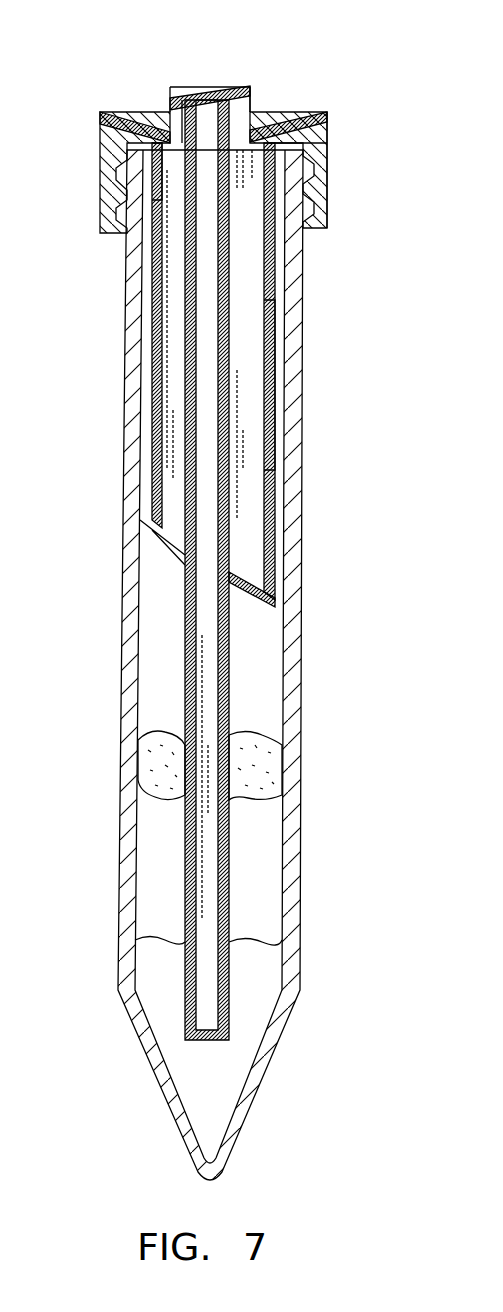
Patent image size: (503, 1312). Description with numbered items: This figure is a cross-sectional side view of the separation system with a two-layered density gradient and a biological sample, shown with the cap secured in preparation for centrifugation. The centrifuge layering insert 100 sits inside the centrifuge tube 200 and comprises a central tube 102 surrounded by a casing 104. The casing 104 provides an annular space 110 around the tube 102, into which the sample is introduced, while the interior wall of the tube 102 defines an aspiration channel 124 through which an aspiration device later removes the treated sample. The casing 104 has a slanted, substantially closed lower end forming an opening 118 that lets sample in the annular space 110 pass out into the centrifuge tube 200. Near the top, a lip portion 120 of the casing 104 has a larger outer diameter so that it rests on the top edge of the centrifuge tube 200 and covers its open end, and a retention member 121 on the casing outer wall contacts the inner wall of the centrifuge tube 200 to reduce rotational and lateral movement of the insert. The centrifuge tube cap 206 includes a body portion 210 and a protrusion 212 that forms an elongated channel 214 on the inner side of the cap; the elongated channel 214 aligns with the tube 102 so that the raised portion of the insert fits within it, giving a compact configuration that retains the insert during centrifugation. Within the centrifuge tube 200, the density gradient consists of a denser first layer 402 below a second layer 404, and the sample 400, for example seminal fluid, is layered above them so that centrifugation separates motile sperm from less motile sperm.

The centrifuge layering insert 100 is at (158, 313).
The tube 102 is at (232, 670).
The casing 104 is at (282, 382).
The annular space 110 is at (180, 173).
The opening 118 is at (282, 582).
The lip portion 120 is at (325, 147).
The retention member 121 is at (150, 448).
The aspiration channel 124 is at (215, 128).
The centrifuge tube 200 is at (126, 347).
The centrifuge tube cap 206 is at (323, 113).
The body portion 210 is at (330, 125).
The protrusion 212 is at (248, 80).
The elongated channel 214 is at (168, 98).
The sample 400 is at (268, 766).
The first layer 402 is at (258, 988).
The second layer 404 is at (258, 878).